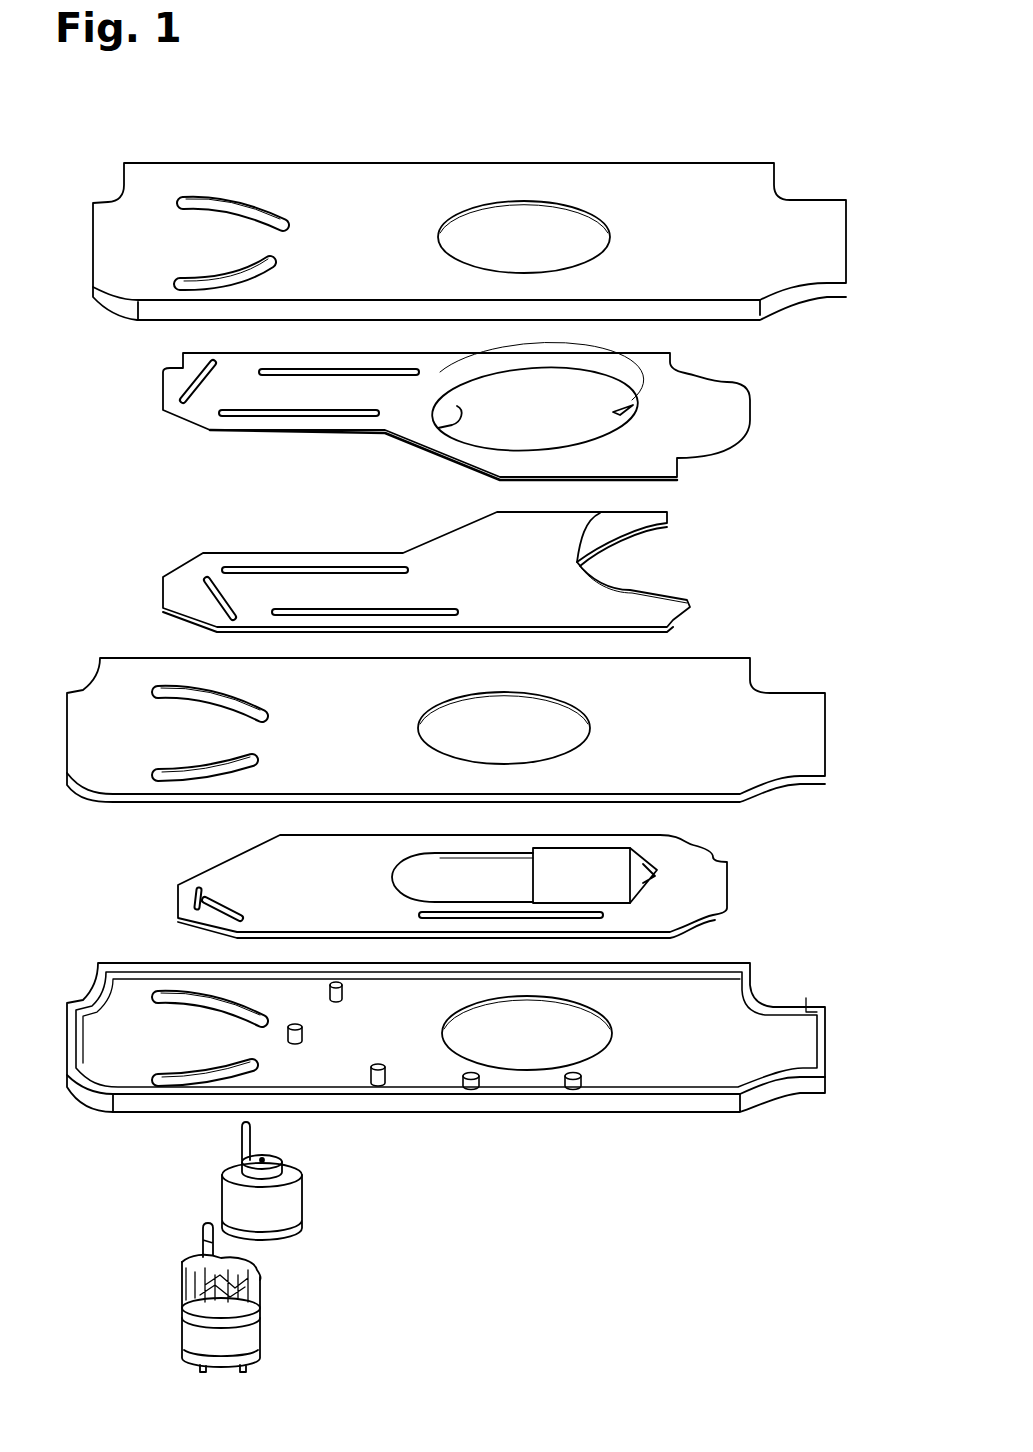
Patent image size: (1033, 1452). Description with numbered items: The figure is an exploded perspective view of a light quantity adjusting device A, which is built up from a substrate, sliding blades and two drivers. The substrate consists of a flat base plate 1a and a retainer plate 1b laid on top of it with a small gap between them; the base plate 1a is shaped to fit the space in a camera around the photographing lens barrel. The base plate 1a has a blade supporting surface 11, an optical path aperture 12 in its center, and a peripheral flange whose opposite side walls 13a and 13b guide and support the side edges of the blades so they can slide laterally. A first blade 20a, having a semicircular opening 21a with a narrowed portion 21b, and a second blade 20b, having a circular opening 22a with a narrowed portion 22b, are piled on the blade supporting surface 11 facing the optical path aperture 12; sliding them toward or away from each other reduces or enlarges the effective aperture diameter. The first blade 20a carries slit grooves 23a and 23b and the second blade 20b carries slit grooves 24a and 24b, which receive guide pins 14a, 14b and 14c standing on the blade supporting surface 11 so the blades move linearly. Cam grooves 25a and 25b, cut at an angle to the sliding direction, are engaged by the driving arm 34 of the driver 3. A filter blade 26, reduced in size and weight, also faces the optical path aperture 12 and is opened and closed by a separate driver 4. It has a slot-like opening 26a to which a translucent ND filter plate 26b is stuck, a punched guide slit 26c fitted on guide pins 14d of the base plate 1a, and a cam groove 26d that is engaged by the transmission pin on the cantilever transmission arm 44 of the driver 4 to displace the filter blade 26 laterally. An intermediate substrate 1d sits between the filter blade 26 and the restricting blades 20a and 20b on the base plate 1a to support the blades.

The light quantity adjusting device A is at (683, 128).
The base plate 1a is at (817, 1067).
The retainer plate 1b is at (117, 227).
The intermediate substrate 1d is at (733, 702).
The driver 3 is at (165, 1335).
The driver 4 is at (277, 1210).
The blade supporting surface 11 is at (410, 1040).
The optical path aperture 12 is at (593, 1037).
The side wall 13a is at (697, 1103).
The side wall 13b is at (675, 967).
The guide pin 14a is at (375, 1085).
The guide pin 14b is at (305, 1038).
The guide pin 14c is at (345, 983).
The guide pins 14d is at (570, 1095).
The first blade 20a is at (188, 577).
The second blade 20b is at (200, 410).
The semicircular opening 21a is at (633, 590).
The narrowed portion 21b is at (640, 517).
The circular opening 22a is at (443, 430).
The narrowed portion 22b is at (628, 408).
The slit groove 23a is at (425, 605).
The slit groove 23b is at (318, 570).
The slit groove 24a is at (273, 415).
The slit groove 24b is at (345, 372).
The cam groove 25a is at (218, 603).
The cam groove 25b is at (187, 367).
The filter blade 26 is at (277, 872).
The opening 26a is at (660, 862).
The filter plate (ND filter) 26b is at (610, 845).
The guide slit 26c is at (465, 915).
The cam groove 26d is at (203, 900).
The driving arm 34 is at (203, 1237).
The transmission arm 44 is at (240, 1133).